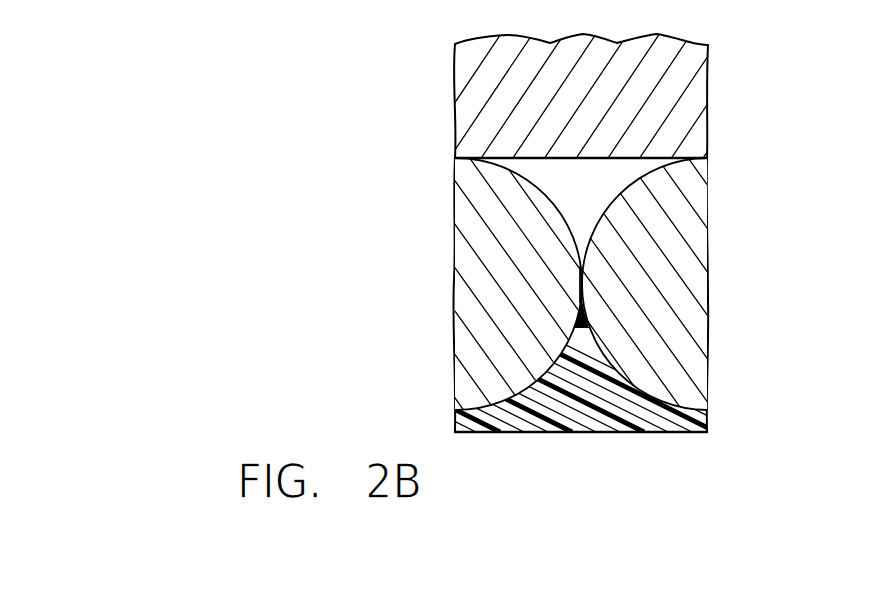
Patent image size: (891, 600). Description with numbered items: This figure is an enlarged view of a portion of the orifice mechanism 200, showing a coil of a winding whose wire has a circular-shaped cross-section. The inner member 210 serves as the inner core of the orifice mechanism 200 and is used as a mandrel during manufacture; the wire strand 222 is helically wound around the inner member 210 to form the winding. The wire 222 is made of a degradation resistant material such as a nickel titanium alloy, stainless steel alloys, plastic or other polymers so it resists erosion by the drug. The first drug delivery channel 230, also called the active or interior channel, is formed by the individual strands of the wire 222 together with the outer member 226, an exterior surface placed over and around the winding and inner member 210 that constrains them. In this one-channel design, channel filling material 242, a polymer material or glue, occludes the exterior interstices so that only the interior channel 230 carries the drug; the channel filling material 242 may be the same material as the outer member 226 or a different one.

The orifice mechanism 200 is at (772, 151).
The inner member 210 is at (482, 78).
The wire strand 222 is at (472, 180).
The first drug delivery channel 230 is at (612, 172).
The channel filling material 242 is at (577, 382).
The outer member 226 is at (670, 420).